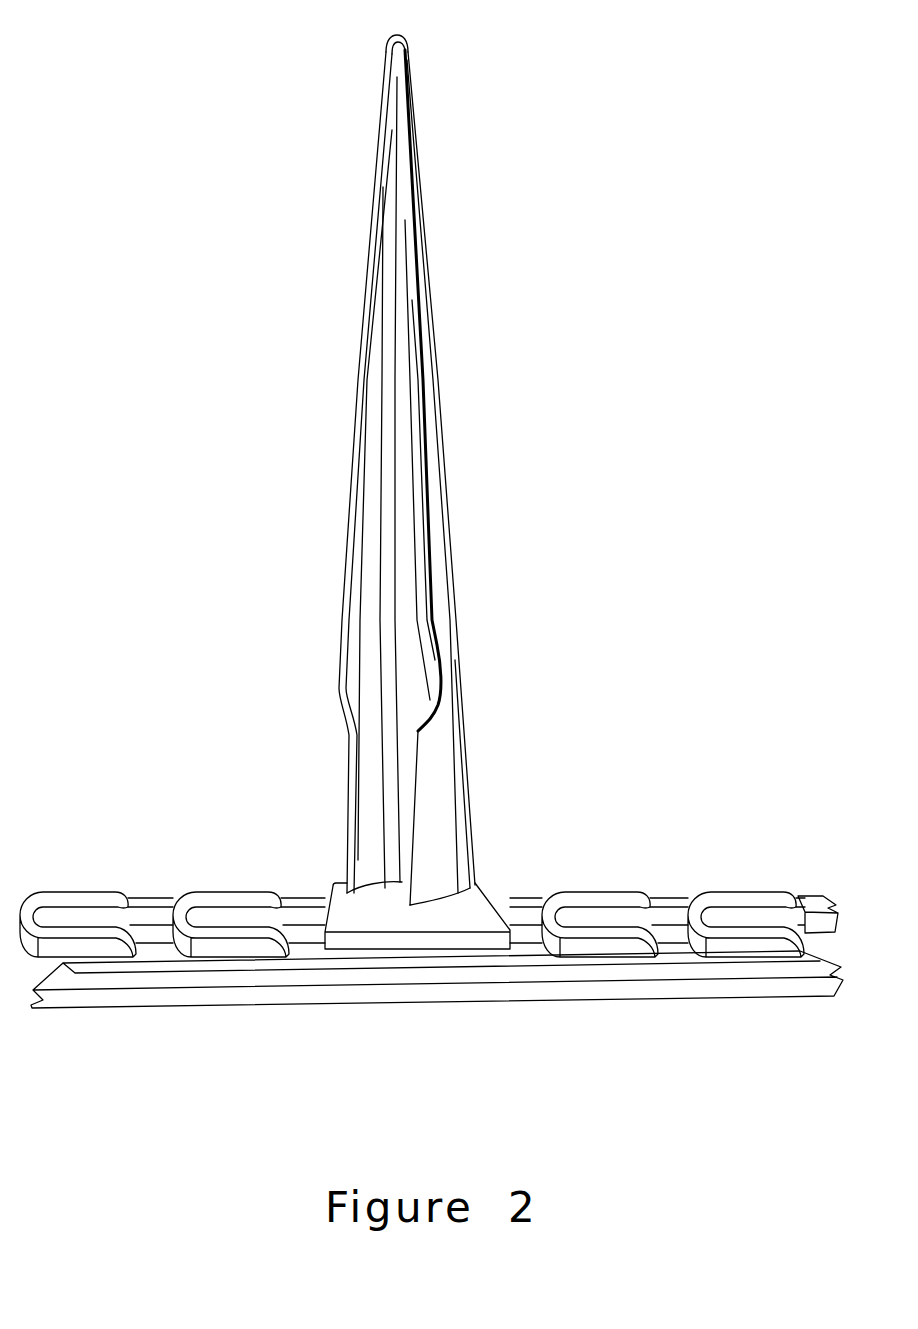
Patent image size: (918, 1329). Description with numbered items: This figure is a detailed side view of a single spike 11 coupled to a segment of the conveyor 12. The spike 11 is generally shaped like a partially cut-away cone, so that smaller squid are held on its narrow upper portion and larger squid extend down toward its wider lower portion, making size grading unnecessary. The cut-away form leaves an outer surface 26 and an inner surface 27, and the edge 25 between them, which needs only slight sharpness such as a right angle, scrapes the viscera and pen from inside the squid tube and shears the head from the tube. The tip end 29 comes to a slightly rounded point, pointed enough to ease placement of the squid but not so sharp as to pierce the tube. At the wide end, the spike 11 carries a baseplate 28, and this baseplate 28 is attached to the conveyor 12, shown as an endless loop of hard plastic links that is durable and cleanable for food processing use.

The spike 11 is at (655, 467).
The conveyor 12 is at (218, 902).
The edge 25 is at (433, 558).
The outer surface 26 is at (435, 425).
The inner surface 27 is at (381, 443).
The baseplate 28 is at (477, 918).
The tip end 29 is at (407, 45).